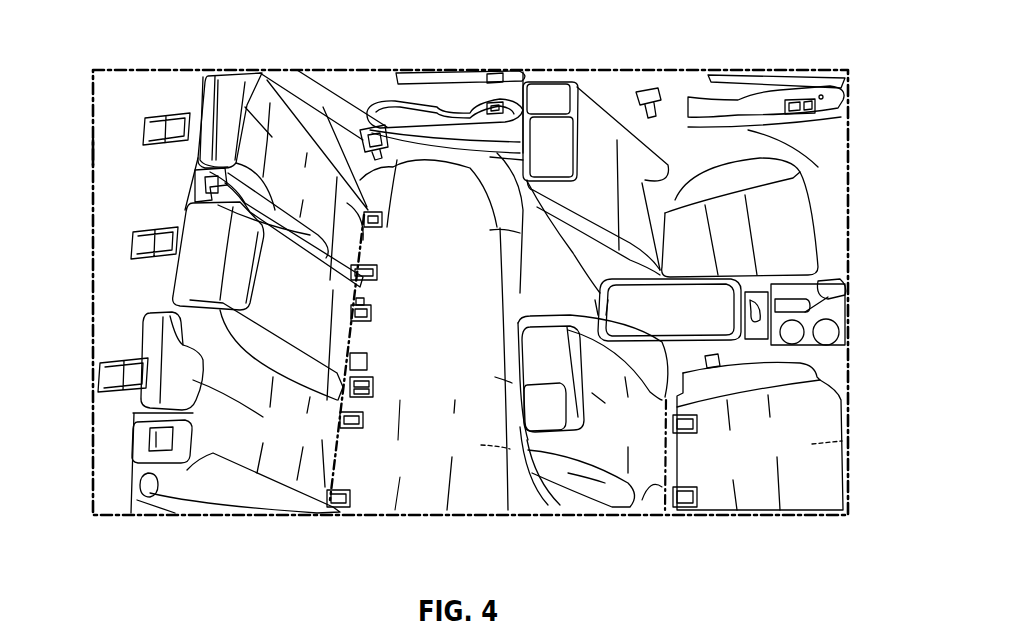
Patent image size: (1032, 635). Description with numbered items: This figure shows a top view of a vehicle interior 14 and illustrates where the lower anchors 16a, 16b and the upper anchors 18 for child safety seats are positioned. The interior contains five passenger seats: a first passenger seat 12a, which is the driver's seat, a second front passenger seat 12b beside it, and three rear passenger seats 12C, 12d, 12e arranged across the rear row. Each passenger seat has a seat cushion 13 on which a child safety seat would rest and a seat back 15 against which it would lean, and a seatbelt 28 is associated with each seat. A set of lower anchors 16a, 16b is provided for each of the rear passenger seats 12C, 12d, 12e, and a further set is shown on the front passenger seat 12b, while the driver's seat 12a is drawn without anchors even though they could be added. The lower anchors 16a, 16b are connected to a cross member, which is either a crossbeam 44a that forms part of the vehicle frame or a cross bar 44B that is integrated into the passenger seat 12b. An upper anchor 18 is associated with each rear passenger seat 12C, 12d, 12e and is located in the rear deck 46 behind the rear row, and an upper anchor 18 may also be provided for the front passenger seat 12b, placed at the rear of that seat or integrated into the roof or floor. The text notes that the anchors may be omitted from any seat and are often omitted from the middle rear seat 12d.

The vehicle interior 14 is at (822, 136).
The rear deck 46 is at (100, 160).
The upper anchor 18 is at (143, 128).
The seatbelt 28 is at (208, 147).
The cross bar 44B is at (366, 212).
The crossbeam 44a is at (646, 485).
The seat back 15 is at (320, 197).
The seat cushion 13 is at (441, 248).
The lower anchor 16a is at (383, 214).
The lower anchor 16b is at (378, 277).
The rear passenger seat 12C is at (500, 227).
The rear passenger seat 12e is at (450, 477).
The first passenger seat 12a is at (818, 210).
The rear passenger seat 12d is at (527, 297).
The second front passenger seat 12b is at (830, 430).